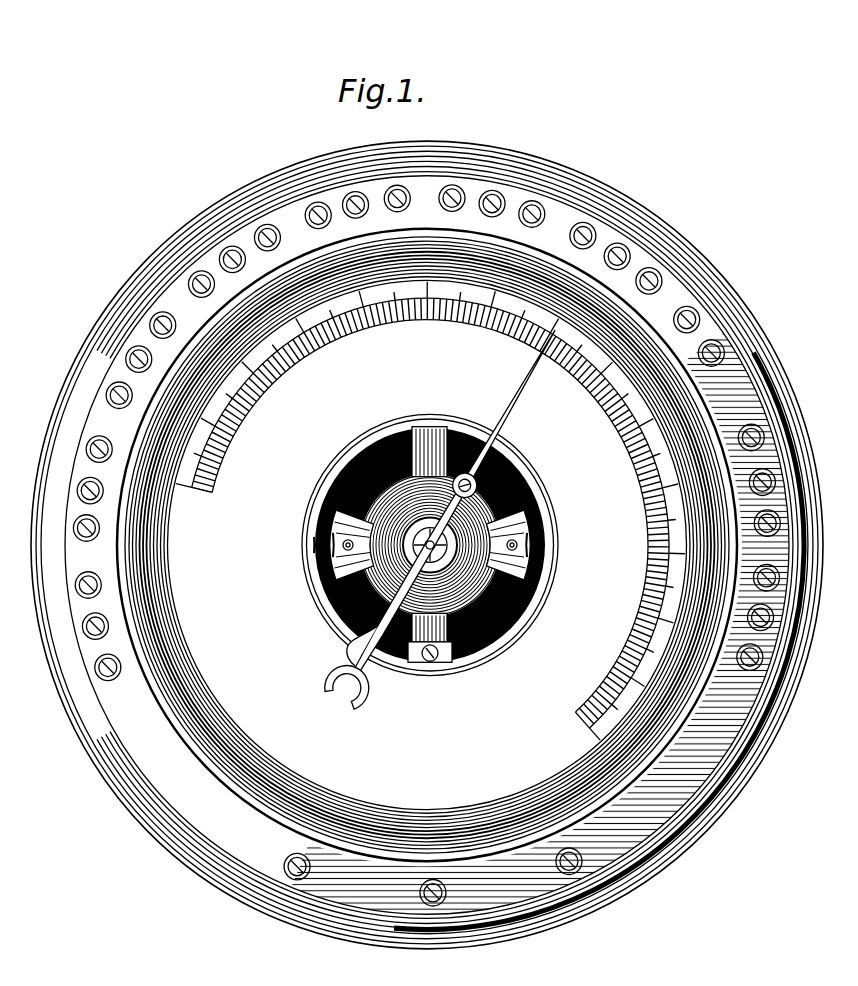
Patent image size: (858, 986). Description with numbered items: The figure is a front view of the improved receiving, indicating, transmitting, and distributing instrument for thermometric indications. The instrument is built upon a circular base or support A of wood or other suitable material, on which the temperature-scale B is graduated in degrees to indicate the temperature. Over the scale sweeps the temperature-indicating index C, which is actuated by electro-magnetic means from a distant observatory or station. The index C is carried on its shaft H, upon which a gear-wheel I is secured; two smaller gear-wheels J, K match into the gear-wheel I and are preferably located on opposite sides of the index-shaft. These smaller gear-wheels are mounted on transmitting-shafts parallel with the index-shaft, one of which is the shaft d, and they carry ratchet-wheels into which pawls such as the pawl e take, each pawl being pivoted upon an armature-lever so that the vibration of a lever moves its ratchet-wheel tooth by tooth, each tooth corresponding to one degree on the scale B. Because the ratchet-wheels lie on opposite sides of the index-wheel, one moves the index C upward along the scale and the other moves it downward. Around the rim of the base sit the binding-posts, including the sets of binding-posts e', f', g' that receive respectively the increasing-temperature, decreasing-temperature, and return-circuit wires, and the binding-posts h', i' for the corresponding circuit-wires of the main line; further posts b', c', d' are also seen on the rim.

The base or support A is at (427, 545).
The temperature-scale B is at (430, 515).
The temperature-indicating index C is at (447, 515).
The gear-wheel I is at (352, 545).
The smaller gear-wheel J is at (529, 545).
The pawl e is at (542, 544).
The shaft of the index H is at (552, 555).
The transmitting-shaft d is at (305, 541).
The smaller gear-wheel K is at (295, 552).
The screw b' is at (711, 339).
The screw c' is at (308, 210).
The screw d' is at (190, 284).
The binding-post e' is at (152, 325).
The binding-post f' is at (110, 396).
The binding-post g' is at (128, 359).
The binding-post h' is at (284, 866).
The binding-post i' is at (447, 896).